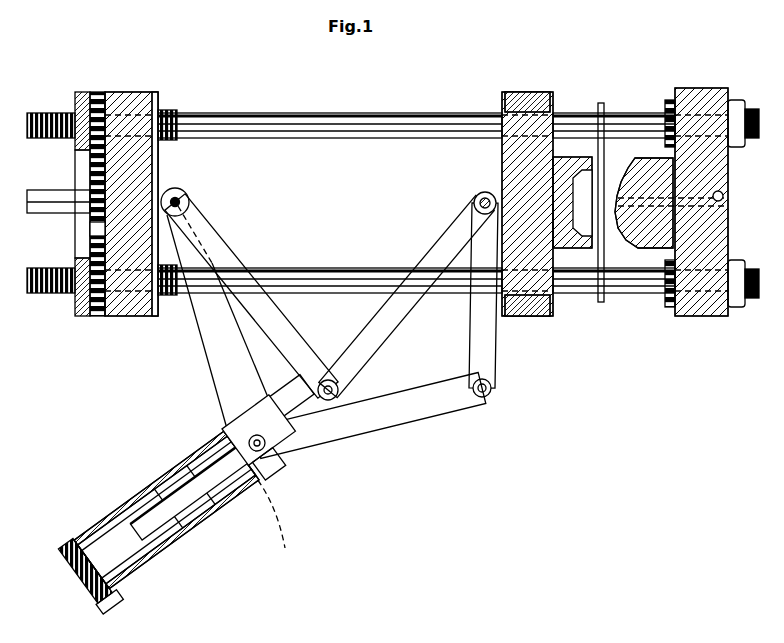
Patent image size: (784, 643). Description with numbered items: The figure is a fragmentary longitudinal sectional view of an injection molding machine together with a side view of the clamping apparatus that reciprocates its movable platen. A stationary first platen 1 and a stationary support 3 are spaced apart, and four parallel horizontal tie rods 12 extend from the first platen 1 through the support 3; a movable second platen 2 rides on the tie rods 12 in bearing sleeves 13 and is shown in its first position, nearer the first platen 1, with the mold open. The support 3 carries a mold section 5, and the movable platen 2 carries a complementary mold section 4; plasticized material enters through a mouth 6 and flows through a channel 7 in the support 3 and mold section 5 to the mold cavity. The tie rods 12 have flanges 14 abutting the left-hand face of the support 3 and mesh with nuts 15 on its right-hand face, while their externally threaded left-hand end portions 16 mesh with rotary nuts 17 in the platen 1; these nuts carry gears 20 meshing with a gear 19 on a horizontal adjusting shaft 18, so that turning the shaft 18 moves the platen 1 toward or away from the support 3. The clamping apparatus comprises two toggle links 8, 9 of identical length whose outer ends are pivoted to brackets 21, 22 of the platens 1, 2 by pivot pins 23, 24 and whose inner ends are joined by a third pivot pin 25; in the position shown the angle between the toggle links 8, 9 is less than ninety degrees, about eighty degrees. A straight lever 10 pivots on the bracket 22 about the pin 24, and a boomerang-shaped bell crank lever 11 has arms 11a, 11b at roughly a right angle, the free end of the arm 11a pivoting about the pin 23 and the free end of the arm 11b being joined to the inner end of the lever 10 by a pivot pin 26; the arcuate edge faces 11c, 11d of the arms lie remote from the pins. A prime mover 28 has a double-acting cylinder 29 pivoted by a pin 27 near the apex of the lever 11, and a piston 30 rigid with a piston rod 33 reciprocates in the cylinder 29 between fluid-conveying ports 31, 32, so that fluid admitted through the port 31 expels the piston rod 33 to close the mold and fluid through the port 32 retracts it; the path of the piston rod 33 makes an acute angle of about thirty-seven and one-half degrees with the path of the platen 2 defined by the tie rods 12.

The stationary first platen 1 is at (128, 92).
The movable second platen 2 is at (506, 92).
The stationary support 3 is at (686, 96).
The mold section 4 is at (565, 160).
The mold section 5 is at (640, 165).
The mouth 6 is at (720, 200).
The channel 7 is at (718, 191).
The toggle link 8 is at (223, 243).
The toggle link 9 is at (438, 262).
The lever 10 is at (500, 350).
The bell crank lever 11 is at (322, 385).
The arm 11a is at (200, 360).
The arm 11b is at (440, 410).
The edge face 11c is at (268, 400).
The edge face 11d is at (272, 514).
The tie rods 12 is at (268, 120).
The bearing sleeves 13 is at (525, 100).
The flanges 14 is at (668, 310).
The nuts 15 is at (740, 312).
The externally threaded left-hand end portions 16 is at (166, 110).
The nuts 17 is at (155, 92).
The adjusting shaft 18 is at (50, 210).
The gear 19 is at (92, 235).
The gears 20 is at (100, 92).
The bracket 21 is at (163, 192).
The bracket 22 is at (500, 190).
The pivot pin 23 is at (180, 200).
The pivot pin 24 is at (480, 200).
The pivot pin 25 is at (330, 379).
The pivot pin 26 is at (492, 392).
The pivot pin 27 is at (266, 455).
The prime mover 28 is at (192, 552).
The cylinder 29 is at (245, 500).
The piston 30 is at (128, 574).
The fluid-conveying port 31 is at (120, 602).
The fluid-conveying port 32 is at (276, 480).
The piston rod 33 is at (262, 420).